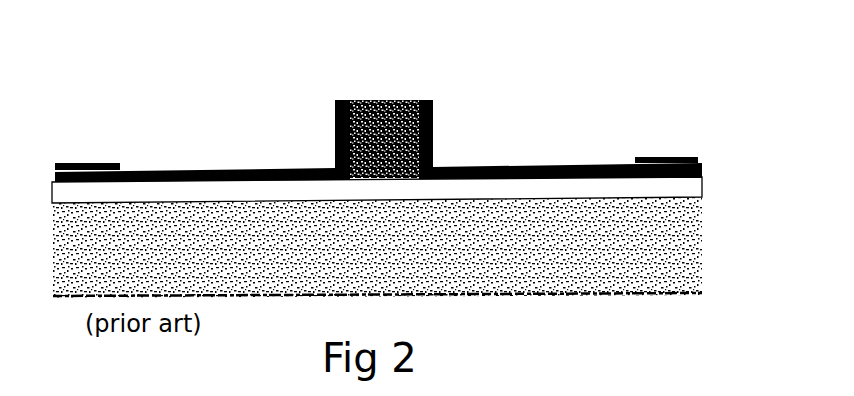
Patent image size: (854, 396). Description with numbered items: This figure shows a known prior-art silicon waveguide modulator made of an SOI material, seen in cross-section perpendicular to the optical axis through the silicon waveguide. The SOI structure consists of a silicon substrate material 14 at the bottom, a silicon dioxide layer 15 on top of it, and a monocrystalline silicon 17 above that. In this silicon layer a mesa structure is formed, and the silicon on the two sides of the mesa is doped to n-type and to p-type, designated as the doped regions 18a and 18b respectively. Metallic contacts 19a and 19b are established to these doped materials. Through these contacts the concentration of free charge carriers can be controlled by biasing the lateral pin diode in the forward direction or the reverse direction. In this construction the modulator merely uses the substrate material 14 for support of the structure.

The silicon substrate material 14 is at (617, 255).
The silicon dioxide layer 15 is at (620, 190).
The monocrystalline silicon 17 is at (378, 148).
The n-type doped region 18a is at (197, 168).
The p-type doped region 18b is at (515, 163).
The metallic contact 19a is at (83, 162).
The metallic contact 19b is at (663, 153).